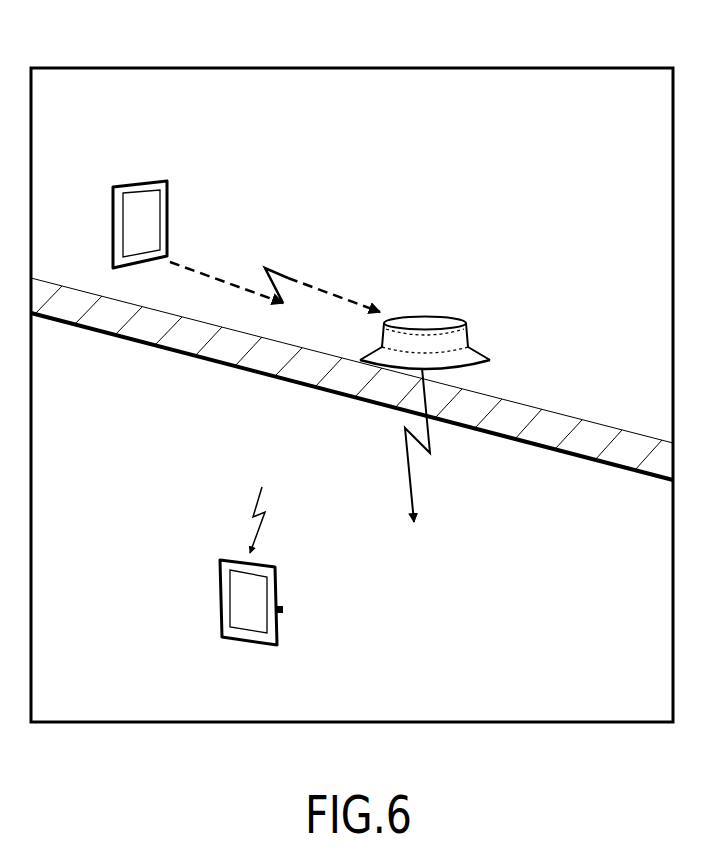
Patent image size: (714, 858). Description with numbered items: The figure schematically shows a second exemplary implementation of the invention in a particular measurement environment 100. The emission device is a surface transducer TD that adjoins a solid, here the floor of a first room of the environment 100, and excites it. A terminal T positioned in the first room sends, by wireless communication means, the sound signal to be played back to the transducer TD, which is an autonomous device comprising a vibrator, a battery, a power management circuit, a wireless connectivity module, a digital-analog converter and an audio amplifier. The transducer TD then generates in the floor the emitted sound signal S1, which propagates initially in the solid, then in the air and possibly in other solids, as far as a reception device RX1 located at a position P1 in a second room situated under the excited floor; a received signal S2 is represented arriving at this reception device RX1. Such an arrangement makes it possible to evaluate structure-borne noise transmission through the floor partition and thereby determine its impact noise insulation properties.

The environment 100 is at (355, 68).
The terminal T is at (167, 178).
The surface transducer TD is at (428, 318).
The sound signal emitted S1 is at (431, 449).
The second signal S2 is at (261, 503).
The reception device RX1 is at (255, 647).
The position P1 is at (283, 610).